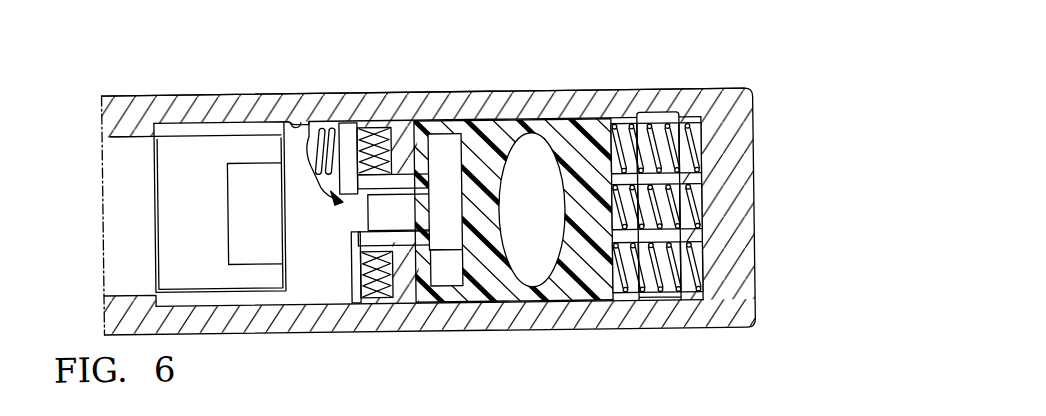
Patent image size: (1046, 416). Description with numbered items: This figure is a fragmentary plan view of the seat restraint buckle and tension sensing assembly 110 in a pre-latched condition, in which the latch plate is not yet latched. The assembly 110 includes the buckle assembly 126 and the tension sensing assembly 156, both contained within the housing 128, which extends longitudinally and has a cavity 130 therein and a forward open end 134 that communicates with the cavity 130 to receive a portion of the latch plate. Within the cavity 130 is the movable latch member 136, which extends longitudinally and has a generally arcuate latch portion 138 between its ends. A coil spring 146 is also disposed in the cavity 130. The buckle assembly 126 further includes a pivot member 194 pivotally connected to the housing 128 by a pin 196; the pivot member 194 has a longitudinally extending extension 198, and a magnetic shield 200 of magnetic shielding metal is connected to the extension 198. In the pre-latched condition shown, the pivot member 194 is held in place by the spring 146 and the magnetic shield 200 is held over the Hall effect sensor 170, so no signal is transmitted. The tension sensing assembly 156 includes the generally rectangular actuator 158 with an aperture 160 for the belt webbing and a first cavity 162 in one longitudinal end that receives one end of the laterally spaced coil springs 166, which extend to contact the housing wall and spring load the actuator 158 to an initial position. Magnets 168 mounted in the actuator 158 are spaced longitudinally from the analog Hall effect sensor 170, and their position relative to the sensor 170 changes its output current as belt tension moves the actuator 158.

The seat restraint buckle and tension sensing assembly 110 is at (80, 74).
The buckle assembly 126 is at (153, 86).
The housing 128 is at (224, 92).
The cavity 130 is at (282, 124).
The forward open end 134 is at (124, 136).
The latch member 136 is at (180, 235).
The latch portion 138 is at (237, 168).
The spring 146 is at (377, 142).
The tension sensing assembly 156 is at (554, 106).
The actuator 158 is at (572, 299).
The aperture 160 is at (515, 151).
The first cavity 162 is at (618, 142).
The springs 166 is at (637, 142).
The magnets 168 is at (438, 145).
The Hall effect sensor 170 is at (426, 280).
The pivot member 194 is at (298, 135).
The pin 196 is at (348, 139).
The extension 198 is at (350, 198).
The magnetic shield 200 is at (388, 210).